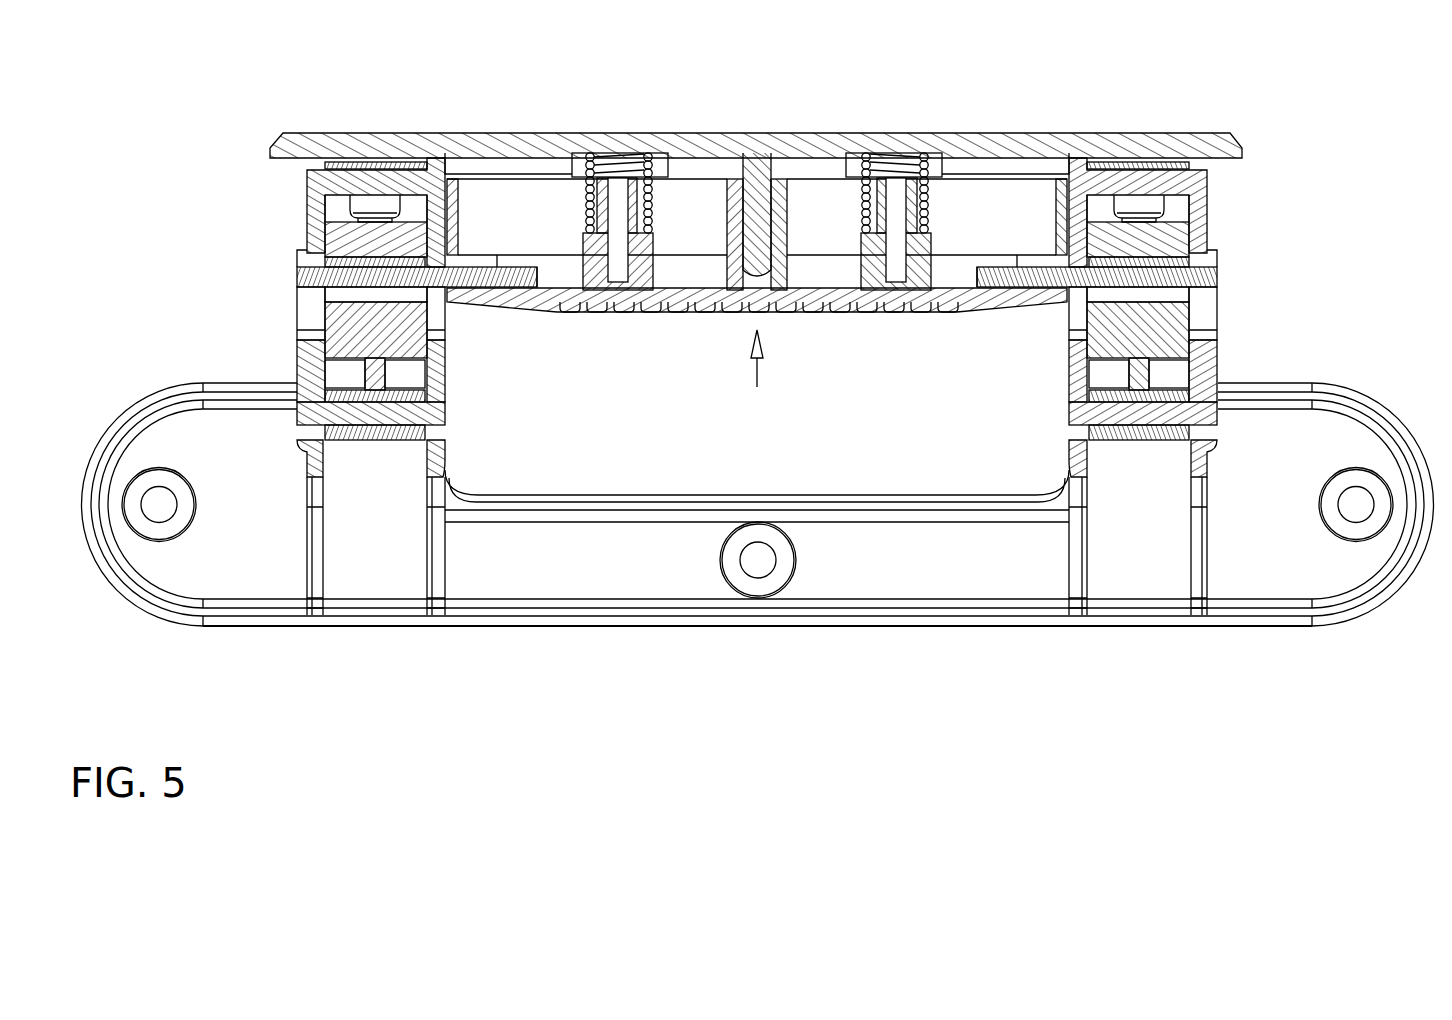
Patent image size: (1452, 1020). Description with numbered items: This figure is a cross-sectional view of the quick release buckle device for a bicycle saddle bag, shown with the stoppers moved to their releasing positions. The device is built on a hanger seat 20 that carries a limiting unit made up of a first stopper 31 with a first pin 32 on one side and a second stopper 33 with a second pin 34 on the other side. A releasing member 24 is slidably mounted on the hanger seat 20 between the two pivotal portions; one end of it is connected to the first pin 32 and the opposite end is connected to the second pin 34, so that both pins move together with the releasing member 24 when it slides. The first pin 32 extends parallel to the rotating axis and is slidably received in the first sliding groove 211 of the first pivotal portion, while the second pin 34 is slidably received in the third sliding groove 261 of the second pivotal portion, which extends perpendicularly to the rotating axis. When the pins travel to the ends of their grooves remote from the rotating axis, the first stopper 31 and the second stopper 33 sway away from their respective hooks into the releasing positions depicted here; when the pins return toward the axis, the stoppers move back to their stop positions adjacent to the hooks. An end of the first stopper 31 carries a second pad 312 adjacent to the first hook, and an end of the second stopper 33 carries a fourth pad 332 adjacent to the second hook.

The hanger seat 20 is at (706, 652).
The releasing member 24 is at (815, 300).
The first stopper 31 is at (1170, 352).
The first pin 32 is at (1217, 275).
The second stopper 33 is at (343, 349).
The second pin 34 is at (312, 277).
The first sliding groove 211 is at (1203, 312).
The third sliding groove 261 is at (312, 312).
The second pad 312 is at (1173, 238).
The fourth pad 332 is at (347, 233).